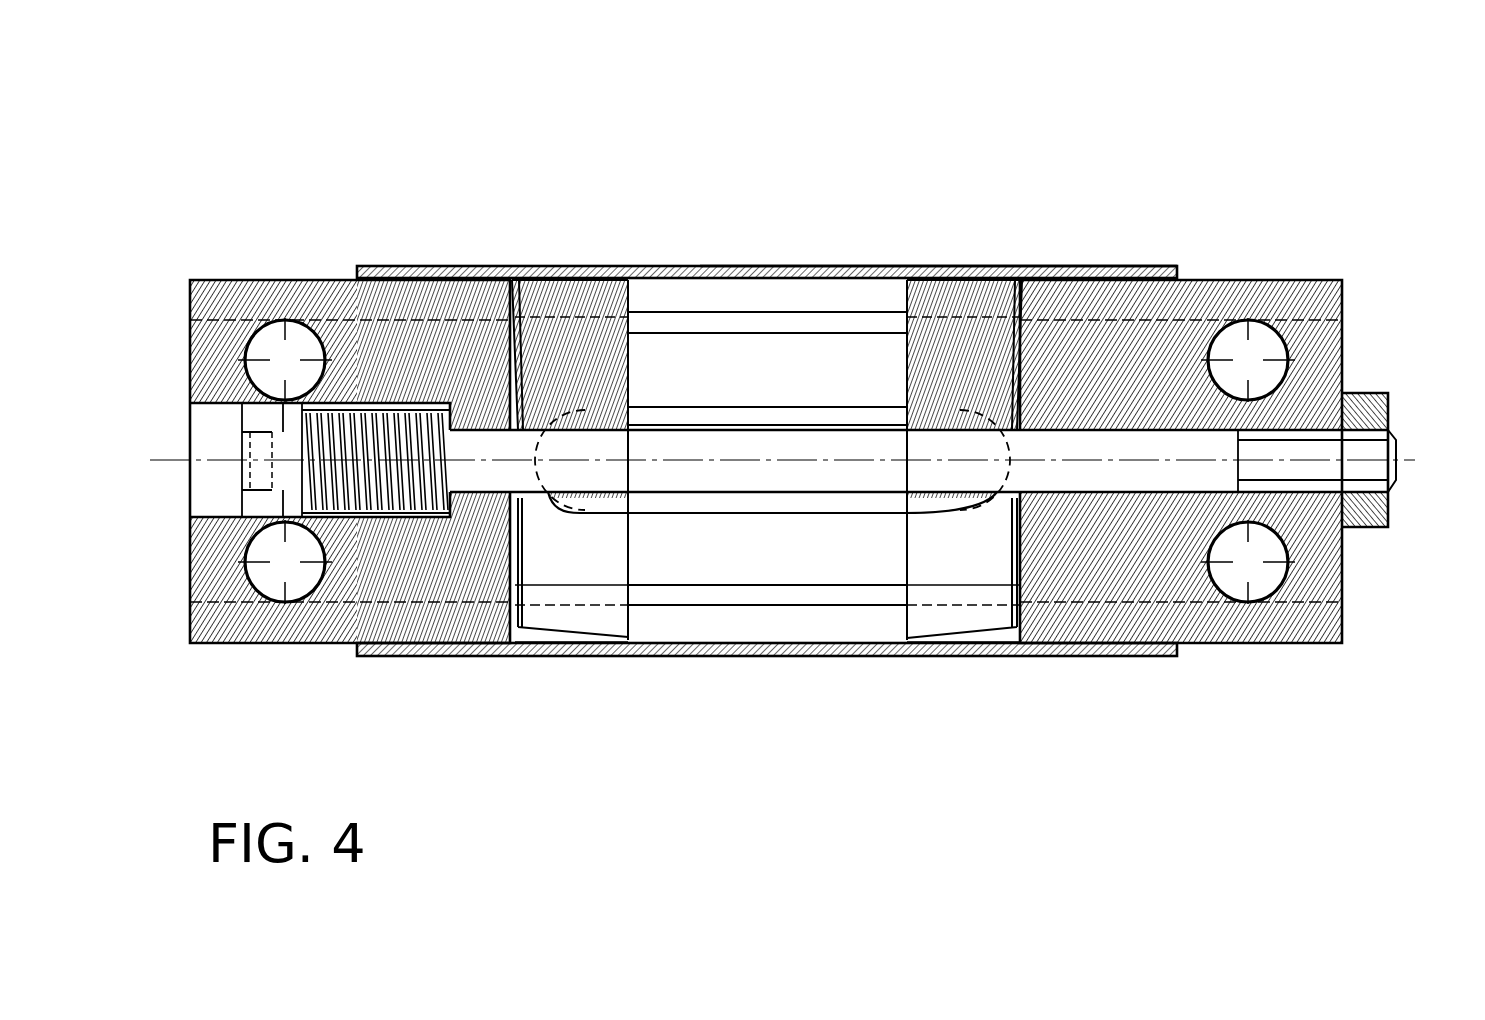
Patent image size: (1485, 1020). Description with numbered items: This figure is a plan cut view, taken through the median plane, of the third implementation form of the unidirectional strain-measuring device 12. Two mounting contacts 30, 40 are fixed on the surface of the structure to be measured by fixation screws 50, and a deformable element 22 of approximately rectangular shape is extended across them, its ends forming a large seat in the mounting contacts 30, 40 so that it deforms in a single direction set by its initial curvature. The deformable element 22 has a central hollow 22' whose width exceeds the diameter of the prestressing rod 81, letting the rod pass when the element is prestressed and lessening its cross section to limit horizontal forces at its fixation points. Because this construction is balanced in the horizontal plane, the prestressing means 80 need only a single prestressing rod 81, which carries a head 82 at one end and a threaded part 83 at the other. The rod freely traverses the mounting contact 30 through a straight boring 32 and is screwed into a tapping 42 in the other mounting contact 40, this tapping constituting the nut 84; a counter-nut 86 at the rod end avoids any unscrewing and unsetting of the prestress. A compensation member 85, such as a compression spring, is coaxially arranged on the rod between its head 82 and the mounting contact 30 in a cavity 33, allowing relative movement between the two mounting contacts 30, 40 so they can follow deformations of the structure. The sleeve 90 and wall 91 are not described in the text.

The strain-measuring device 12 is at (1114, 166).
The deformable element 22 is at (919, 536).
The central hollow 22' is at (772, 584).
The mounting contact 30 is at (418, 590).
The straight boring 32 is at (507, 640).
The cavity 33 is at (372, 407).
The mounting contact 40 is at (1055, 612).
The tapping 42 is at (1153, 607).
The fixation screws 50 is at (284, 324).
The prestressing means 80 is at (222, 440).
The prestressing rod 81 is at (633, 452).
The head 82 is at (258, 498).
The threaded part 83 is at (1310, 455).
The nut 84 is at (1345, 278).
The compensation member 85 is at (380, 490).
The counter-nut 86 is at (1381, 393).
The sleeve 90 is at (741, 256).
The sleeve wall 91 is at (898, 266).